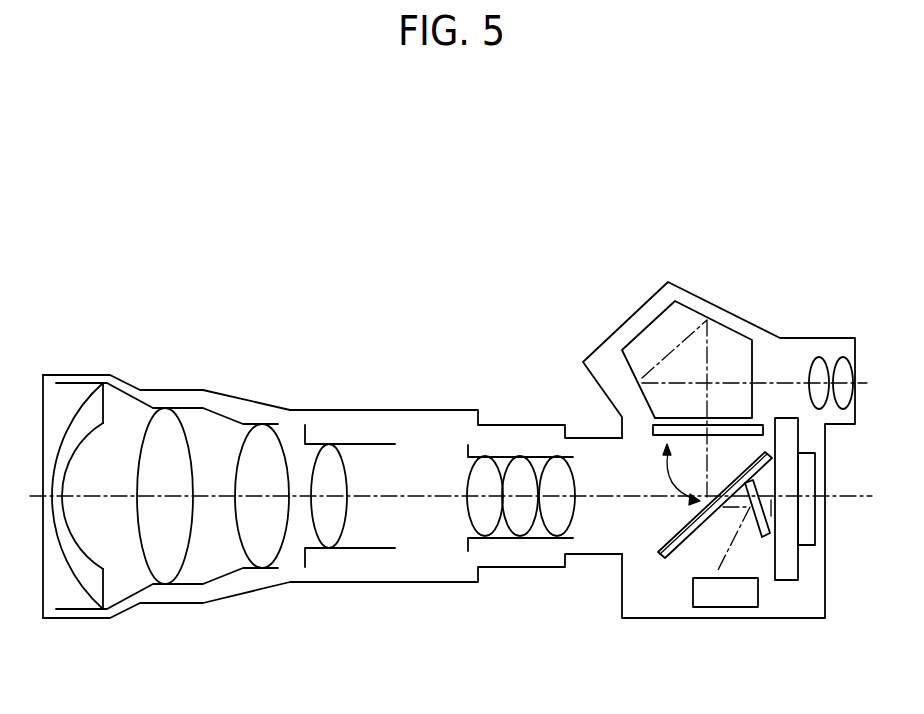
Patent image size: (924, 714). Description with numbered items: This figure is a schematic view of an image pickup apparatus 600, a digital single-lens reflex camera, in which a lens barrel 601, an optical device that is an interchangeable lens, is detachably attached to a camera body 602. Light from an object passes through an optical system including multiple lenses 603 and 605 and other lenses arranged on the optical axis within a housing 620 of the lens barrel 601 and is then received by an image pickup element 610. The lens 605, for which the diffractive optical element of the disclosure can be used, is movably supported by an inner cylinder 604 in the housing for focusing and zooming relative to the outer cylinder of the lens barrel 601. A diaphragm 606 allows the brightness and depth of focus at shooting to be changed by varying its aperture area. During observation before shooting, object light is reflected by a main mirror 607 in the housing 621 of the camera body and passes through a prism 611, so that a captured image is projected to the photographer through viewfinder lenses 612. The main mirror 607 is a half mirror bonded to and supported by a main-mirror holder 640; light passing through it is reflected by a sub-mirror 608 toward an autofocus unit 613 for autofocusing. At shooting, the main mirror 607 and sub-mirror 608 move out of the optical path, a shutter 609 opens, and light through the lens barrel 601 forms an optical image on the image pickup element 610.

The camera system 600 is at (534, 135).
The lens barrel 601 is at (593, 218).
The camera body 602 is at (867, 218).
The lens 603 is at (99, 375).
The housing 620 is at (238, 398).
The inner cylinder 604 is at (347, 443).
The lens 605 is at (330, 523).
The diaphragm 606 is at (467, 452).
The housing 621 is at (616, 329).
The prism 611 is at (738, 348).
The viewfinder lenses 612 is at (840, 358).
The main mirror 607 is at (657, 548).
The main-mirror holder 640 is at (669, 559).
The autofocus (AF) unit 613 is at (725, 608).
The sub-mirror 608 is at (767, 508).
The shutter 609 is at (787, 563).
The image pickup element 610 is at (807, 528).